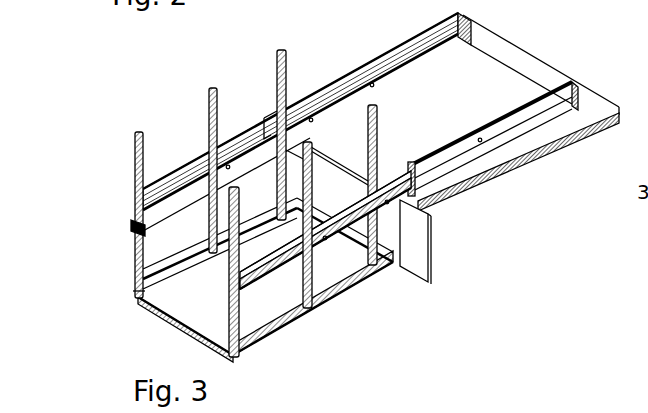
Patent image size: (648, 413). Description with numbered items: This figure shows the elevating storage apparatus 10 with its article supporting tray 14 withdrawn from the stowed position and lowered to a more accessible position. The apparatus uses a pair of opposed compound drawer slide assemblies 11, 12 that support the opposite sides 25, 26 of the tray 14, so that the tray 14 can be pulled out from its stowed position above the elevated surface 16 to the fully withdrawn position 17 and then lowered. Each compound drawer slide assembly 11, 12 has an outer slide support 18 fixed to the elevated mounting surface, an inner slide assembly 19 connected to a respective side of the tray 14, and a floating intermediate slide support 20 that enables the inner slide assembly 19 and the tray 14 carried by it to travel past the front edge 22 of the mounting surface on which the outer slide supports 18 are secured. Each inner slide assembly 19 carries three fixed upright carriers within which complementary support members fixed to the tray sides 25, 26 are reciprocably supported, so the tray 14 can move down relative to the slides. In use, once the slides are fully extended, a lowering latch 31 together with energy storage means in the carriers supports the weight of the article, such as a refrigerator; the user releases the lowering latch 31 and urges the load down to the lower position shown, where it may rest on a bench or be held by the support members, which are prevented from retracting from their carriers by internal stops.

The elevating storage apparatus 10 is at (266, 258).
The compound drawer slide assembly 11 is at (289, 90).
The compound drawer slide assembly 12 is at (436, 138).
The article supporting tray 14 is at (185, 323).
The elevated surface 16 is at (495, 72).
The fully withdrawn position 17 is at (201, 136).
The outer slide support 18 is at (466, 32).
The inner slide assembly 19 is at (150, 201).
The floating intermediate slide support 20 is at (332, 100).
The front edge 22 is at (428, 195).
The side of article support tray 25 is at (133, 291).
The side of article support tray 26 is at (341, 292).
The lowering latch 31 is at (131, 229).